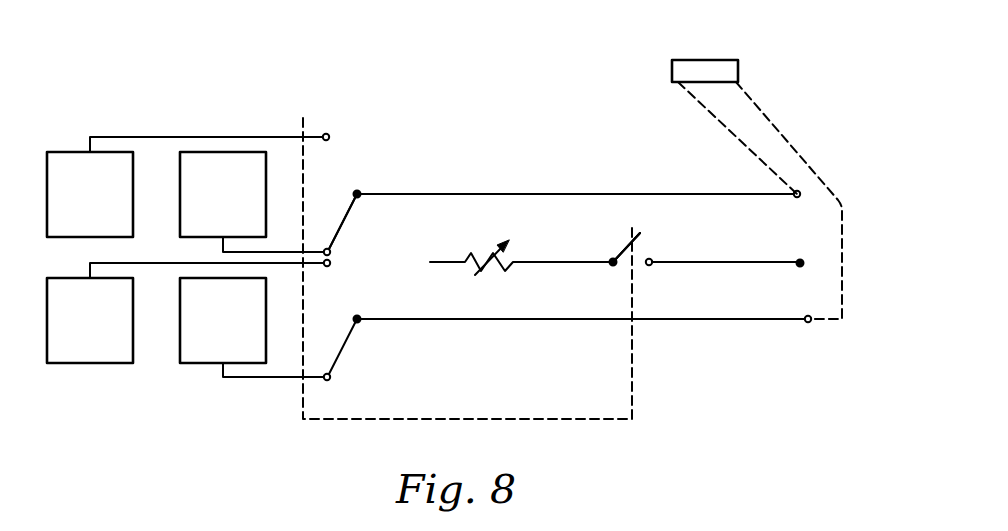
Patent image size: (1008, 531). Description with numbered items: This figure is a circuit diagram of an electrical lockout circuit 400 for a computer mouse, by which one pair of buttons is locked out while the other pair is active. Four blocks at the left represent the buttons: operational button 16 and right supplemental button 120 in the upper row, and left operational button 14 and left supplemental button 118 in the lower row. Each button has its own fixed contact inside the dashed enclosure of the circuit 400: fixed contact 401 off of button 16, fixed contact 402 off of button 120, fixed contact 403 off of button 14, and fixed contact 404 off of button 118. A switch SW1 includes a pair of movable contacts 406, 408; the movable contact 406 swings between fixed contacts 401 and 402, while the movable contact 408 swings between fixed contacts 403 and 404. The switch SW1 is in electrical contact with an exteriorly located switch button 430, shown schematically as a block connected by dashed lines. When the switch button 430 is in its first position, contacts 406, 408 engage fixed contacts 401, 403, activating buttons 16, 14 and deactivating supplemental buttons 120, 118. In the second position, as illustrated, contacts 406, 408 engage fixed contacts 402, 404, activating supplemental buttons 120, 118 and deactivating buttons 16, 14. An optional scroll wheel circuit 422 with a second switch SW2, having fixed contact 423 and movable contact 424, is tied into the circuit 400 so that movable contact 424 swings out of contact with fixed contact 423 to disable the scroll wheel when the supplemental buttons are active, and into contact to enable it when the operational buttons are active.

The left operational button 14 is at (83, 355).
The operational button 16 is at (68, 161).
The left supplemental button 118 is at (203, 353).
The right supplemental button 120 is at (225, 161).
The electrical lockout circuit 400 is at (462, 72).
The fixed contact 401 is at (328, 133).
The fixed contact 402 is at (331, 255).
The fixed contact 403 is at (330, 266).
The fixed contact 404 is at (331, 381).
The movable contact 406 is at (346, 216).
The movable contact 408 is at (343, 347).
The scroll wheel circuit 422 is at (545, 262).
The fixed contact 423 is at (651, 266).
The movable contact 424 is at (635, 238).
The switch button 430 is at (718, 66).
The switch SW1 is at (352, 248).
The second switch SW2 is at (627, 268).